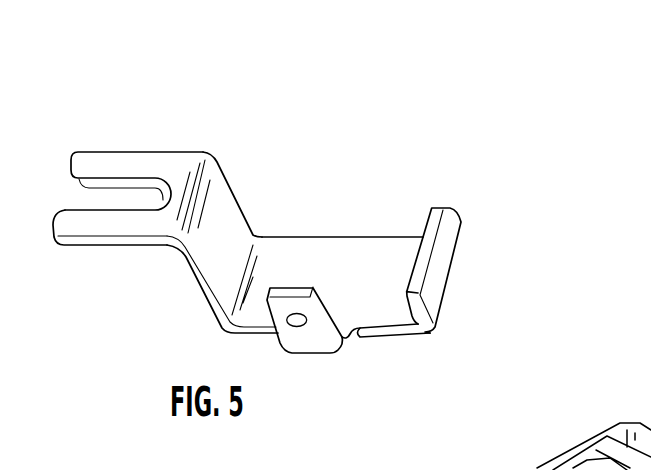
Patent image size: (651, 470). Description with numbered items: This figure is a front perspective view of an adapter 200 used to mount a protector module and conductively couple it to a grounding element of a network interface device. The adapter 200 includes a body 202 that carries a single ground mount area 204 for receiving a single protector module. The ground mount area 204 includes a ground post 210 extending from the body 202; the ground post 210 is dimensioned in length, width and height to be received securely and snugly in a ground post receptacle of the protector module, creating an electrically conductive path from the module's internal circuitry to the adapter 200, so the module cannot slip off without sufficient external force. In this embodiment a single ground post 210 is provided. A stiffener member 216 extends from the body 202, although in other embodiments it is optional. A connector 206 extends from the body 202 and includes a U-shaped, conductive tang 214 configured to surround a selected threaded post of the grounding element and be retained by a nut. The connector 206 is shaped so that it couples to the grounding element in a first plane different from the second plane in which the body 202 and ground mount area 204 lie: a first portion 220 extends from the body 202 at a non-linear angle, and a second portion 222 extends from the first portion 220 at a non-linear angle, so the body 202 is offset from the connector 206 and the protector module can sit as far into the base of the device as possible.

The adapter 200 is at (218, 131).
The body 202 is at (380, 303).
The ground mount area 204 is at (374, 227).
The connector 206 is at (105, 146).
The ground post 210 is at (318, 332).
The U-shaped conductive tang 214 is at (114, 223).
The stiffener member 216 is at (440, 258).
The first portion 220 is at (222, 223).
The second portion 222 is at (148, 226).